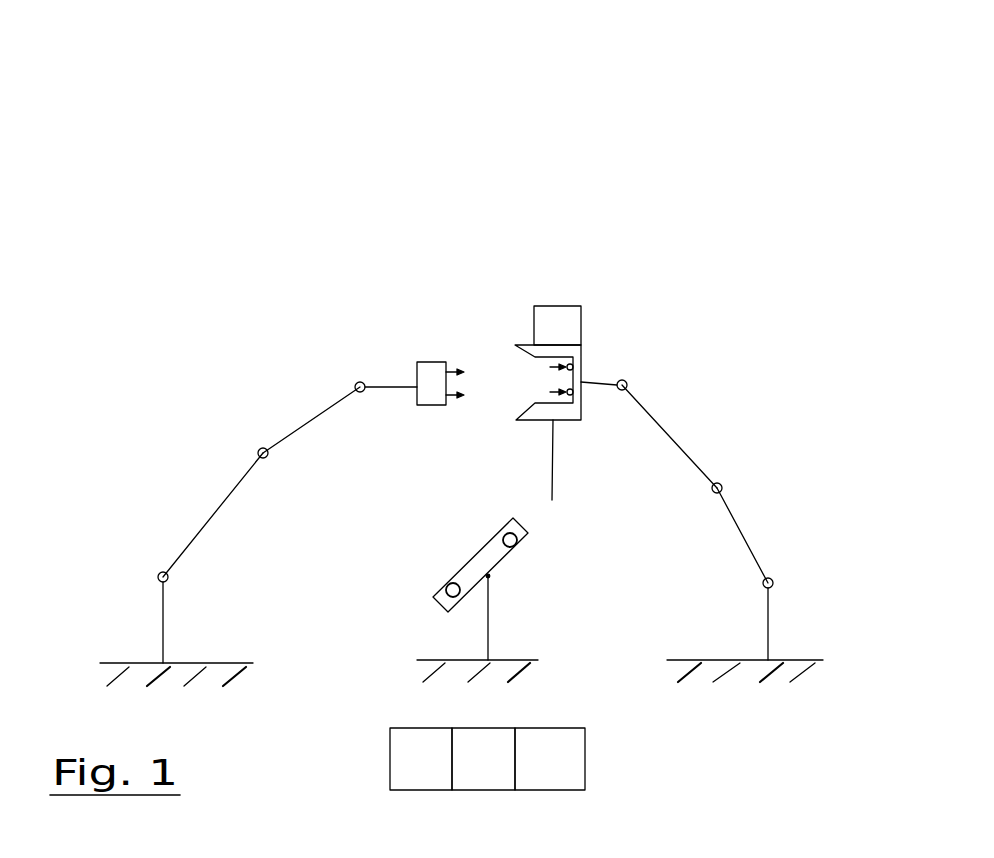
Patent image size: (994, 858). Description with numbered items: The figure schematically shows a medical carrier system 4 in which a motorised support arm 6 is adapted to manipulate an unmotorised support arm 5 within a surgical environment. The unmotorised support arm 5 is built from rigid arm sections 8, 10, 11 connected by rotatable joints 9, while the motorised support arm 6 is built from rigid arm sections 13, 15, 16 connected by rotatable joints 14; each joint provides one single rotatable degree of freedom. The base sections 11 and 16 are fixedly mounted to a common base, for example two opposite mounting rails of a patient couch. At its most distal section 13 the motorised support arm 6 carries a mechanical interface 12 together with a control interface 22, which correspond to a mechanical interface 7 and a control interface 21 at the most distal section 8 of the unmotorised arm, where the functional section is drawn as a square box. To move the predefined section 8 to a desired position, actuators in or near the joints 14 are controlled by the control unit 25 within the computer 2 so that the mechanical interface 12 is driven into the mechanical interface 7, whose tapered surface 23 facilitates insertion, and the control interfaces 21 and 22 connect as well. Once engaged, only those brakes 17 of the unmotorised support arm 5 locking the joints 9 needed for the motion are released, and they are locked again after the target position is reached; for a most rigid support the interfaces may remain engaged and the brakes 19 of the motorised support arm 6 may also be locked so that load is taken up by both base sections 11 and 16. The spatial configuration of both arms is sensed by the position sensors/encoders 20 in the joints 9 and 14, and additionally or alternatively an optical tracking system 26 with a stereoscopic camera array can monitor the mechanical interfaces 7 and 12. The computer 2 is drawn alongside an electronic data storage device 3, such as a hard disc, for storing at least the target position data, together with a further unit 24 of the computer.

The computer 2 is at (352, 768).
The electronic data storage device 3 is at (548, 790).
The medical carrier system 4 is at (495, 98).
The unmotorised support arm 5 is at (832, 279).
The motorised support arm 6 is at (128, 321).
The mechanical interface 7 is at (548, 459).
The most distal section 8 is at (597, 383).
The rotatable joints 9 is at (767, 464).
The rigid arm section 10 is at (682, 451).
The base section 11 is at (768, 631).
The mechanical interface 12 is at (430, 405).
The most distal section 13 is at (395, 388).
The rotatable joints 14 is at (205, 458).
The rigid arm section 15 is at (318, 417).
The base section 16 is at (165, 632).
The brakes 17 is at (628, 380).
The brakes 19 is at (259, 449).
The position sensors/encoders 20 is at (475, 461).
The control interface 21 is at (545, 379).
The control interface 22 is at (473, 383).
The tapered surface 23 is at (510, 349).
The processing unit 24 is at (482, 790).
The control unit 25 is at (415, 790).
The optical tracking system 26 is at (530, 604).